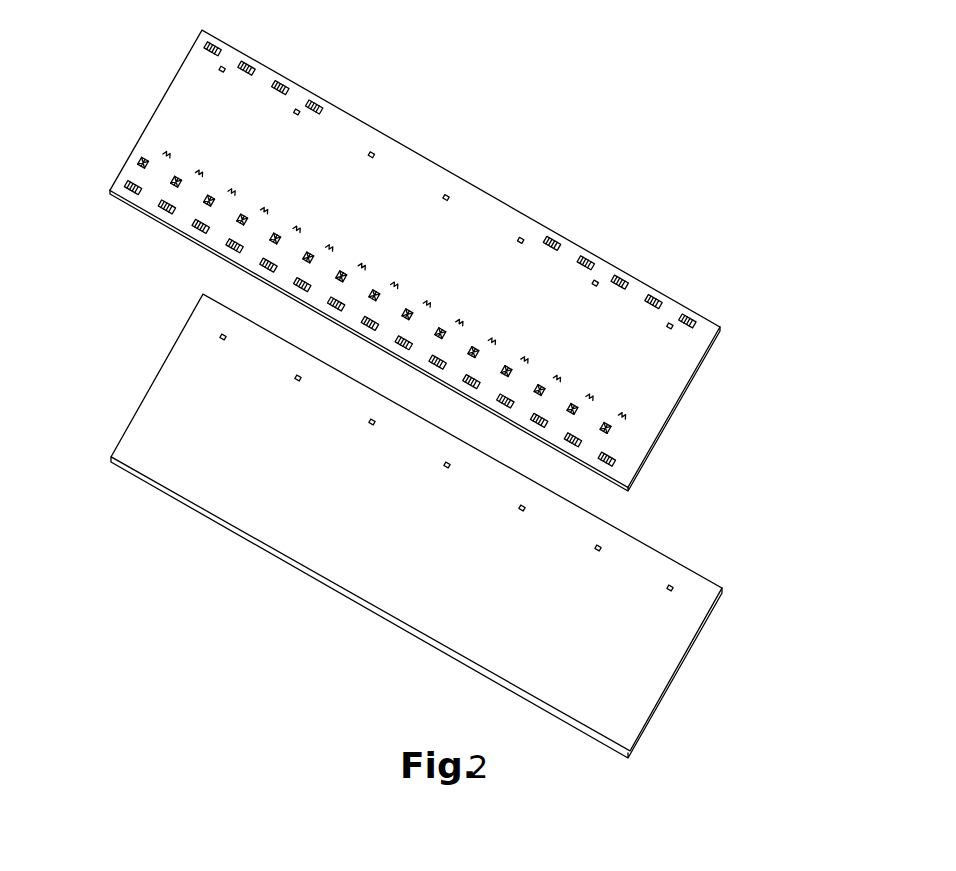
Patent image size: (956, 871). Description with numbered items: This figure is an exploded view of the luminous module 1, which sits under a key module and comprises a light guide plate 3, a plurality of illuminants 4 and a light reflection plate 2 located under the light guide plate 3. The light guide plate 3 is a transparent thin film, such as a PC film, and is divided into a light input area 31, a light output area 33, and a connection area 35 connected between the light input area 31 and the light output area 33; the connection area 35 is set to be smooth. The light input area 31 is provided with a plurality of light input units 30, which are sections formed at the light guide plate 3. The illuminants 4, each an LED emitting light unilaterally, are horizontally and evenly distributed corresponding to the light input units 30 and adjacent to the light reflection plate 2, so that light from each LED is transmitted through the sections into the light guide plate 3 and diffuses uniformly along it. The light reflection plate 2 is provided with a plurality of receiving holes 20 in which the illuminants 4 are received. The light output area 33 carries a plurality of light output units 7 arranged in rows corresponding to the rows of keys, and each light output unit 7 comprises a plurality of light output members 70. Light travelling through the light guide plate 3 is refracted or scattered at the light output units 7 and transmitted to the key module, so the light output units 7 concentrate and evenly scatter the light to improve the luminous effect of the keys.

The luminous module 1 is at (817, 264).
The light reflection plate 2 is at (128, 411).
The receiving holes 20 is at (593, 547).
The light guide plate 3 is at (138, 123).
The light input units 30 is at (670, 326).
The light input area 31 is at (450, 185).
The light output area 33 is at (369, 324).
The connection area 35 is at (415, 258).
The illuminants 4 is at (670, 588).
The light output units 7 is at (374, 295).
The light output members 70 is at (395, 284).